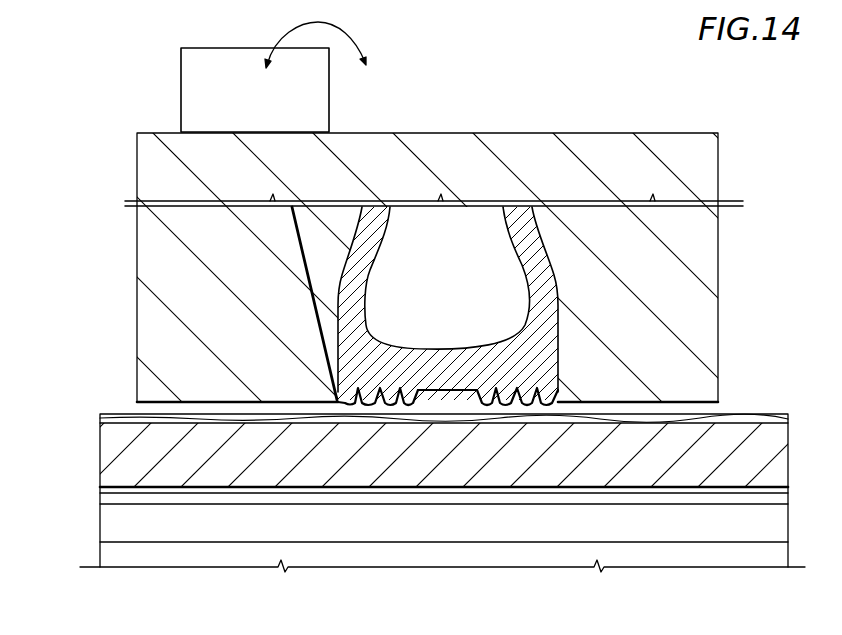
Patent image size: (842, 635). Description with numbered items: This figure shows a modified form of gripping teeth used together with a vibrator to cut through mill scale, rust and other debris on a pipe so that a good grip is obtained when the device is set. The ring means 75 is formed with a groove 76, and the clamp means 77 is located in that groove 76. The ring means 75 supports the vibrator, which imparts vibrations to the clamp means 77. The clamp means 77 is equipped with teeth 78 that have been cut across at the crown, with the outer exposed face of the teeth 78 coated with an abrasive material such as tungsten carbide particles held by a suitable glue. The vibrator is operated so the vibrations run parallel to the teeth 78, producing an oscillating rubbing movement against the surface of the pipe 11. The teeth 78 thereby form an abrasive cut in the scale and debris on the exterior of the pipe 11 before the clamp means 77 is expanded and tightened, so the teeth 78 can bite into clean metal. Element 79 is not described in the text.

The pipe 11 is at (105, 452).
The ring means 75 is at (466, 132).
The groove 76 is at (559, 398).
The clamp means 77 is at (344, 258).
The teeth 78 is at (207, 48).
The serrations 79 is at (348, 404).